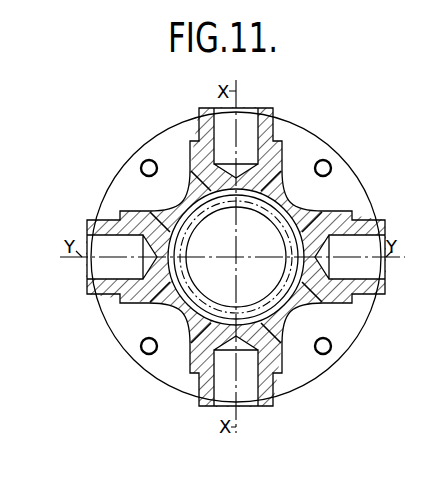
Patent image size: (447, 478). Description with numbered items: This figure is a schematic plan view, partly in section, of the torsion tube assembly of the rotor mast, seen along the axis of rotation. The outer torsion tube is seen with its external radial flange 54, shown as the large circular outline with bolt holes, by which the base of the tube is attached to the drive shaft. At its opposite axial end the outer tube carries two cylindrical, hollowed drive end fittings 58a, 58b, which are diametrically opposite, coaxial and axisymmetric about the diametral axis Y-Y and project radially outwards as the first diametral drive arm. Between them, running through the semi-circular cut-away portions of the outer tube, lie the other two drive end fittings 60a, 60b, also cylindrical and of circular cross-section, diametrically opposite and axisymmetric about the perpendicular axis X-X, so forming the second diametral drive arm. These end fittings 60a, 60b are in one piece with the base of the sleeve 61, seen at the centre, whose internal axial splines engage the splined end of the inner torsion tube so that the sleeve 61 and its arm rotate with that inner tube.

The external radial flange 54 is at (133, 317).
The drive end fitting 58a is at (102, 225).
The drive end fitting 58b is at (368, 223).
The drive end fitting 60a is at (260, 135).
The drive end fitting 60b is at (207, 393).
The sleeve 61 is at (287, 274).